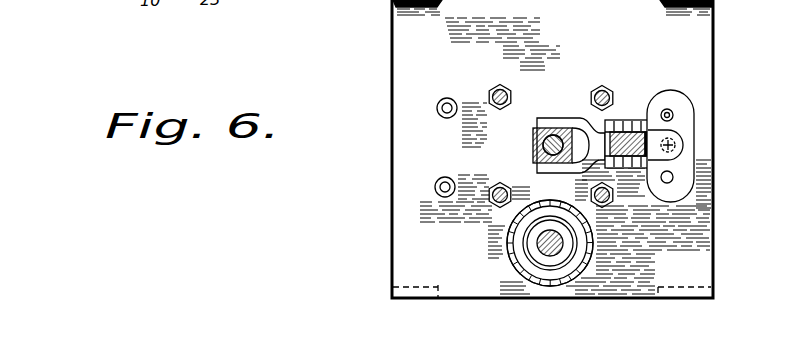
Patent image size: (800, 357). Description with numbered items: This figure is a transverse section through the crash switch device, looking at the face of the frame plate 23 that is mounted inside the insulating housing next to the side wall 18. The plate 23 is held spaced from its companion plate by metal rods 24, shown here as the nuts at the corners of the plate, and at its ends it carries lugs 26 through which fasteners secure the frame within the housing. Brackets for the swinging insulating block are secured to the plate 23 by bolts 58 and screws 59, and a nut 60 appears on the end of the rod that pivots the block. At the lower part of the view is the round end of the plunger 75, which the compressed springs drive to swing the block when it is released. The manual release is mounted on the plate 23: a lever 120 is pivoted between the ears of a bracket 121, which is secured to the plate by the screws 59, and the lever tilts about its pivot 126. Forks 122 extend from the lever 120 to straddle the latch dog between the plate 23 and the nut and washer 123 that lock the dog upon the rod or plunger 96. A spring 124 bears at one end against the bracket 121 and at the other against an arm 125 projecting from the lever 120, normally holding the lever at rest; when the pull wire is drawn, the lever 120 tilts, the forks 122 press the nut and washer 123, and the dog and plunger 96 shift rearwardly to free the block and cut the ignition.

The side wall 18 is at (282, 7).
The nut 60 is at (331, 5).
The metal plate 23 is at (402, 80).
The metal rods 24 is at (498, 85).
The lugs 26 is at (393, 9).
The bolts 58 is at (443, 134).
The screws 59 is at (673, 115).
The plunger 75 is at (540, 252).
The rod or plunger 96 is at (532, 153).
The lever 120 is at (644, 158).
The bracket 121 is at (678, 107).
The forks 122 is at (558, 118).
The nut and washer 123 is at (533, 135).
The spring 124 is at (683, 147).
The arm 125 is at (693, 158).
The pivot 126 is at (632, 116).